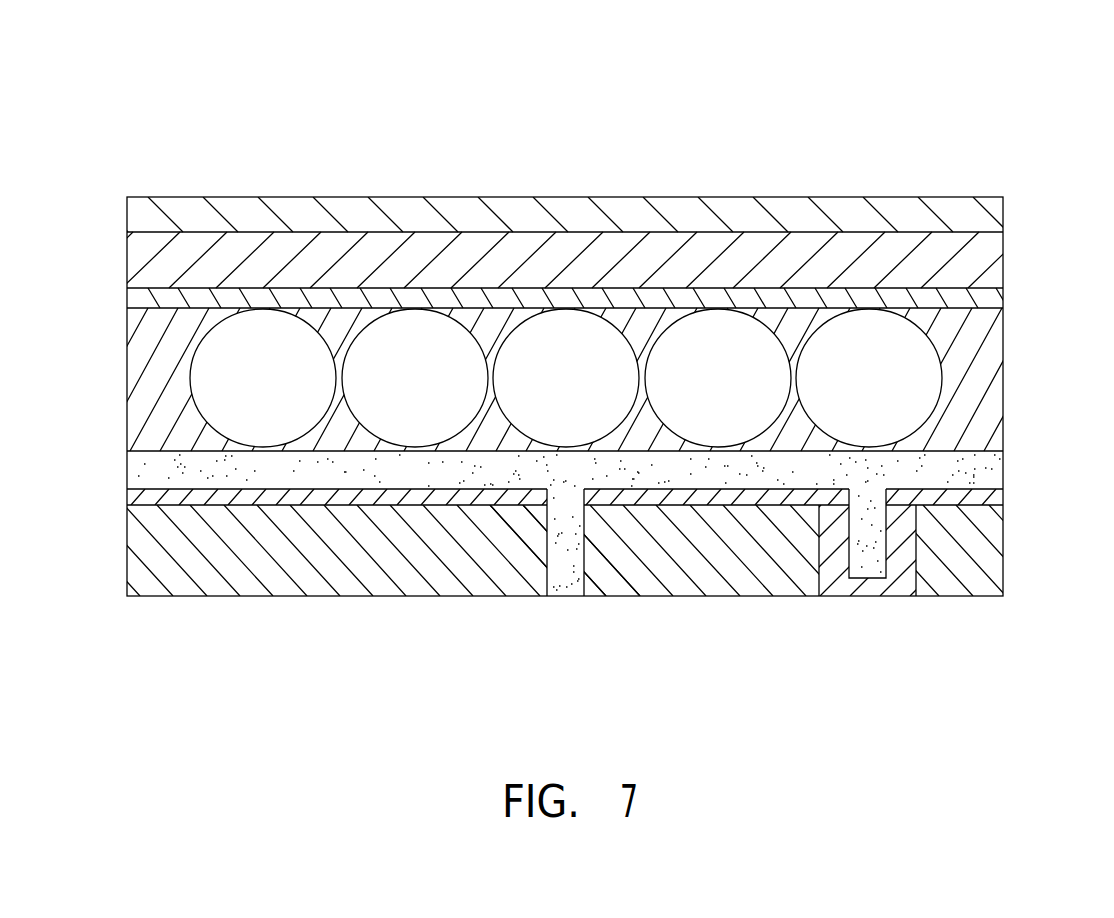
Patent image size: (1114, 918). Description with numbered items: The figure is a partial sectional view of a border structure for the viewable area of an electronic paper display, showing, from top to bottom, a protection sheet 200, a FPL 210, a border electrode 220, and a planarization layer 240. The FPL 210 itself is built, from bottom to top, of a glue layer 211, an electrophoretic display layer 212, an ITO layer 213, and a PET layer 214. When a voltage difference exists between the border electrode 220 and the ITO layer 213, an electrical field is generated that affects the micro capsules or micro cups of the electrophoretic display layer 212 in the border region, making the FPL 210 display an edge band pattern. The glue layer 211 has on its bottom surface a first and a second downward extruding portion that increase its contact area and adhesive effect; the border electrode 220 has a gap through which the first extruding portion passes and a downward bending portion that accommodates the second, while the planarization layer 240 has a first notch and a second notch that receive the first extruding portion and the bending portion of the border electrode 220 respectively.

The protection sheet 200 is at (240, 207).
The FPL 210 is at (573, 345).
The glue layer 211 is at (976, 475).
The electrophoretic display layer 212 is at (872, 348).
The ITO layer 213 is at (402, 297).
The PET layer 214 is at (597, 258).
The border electrode 220 is at (747, 497).
The planarization layer 240 is at (293, 553).